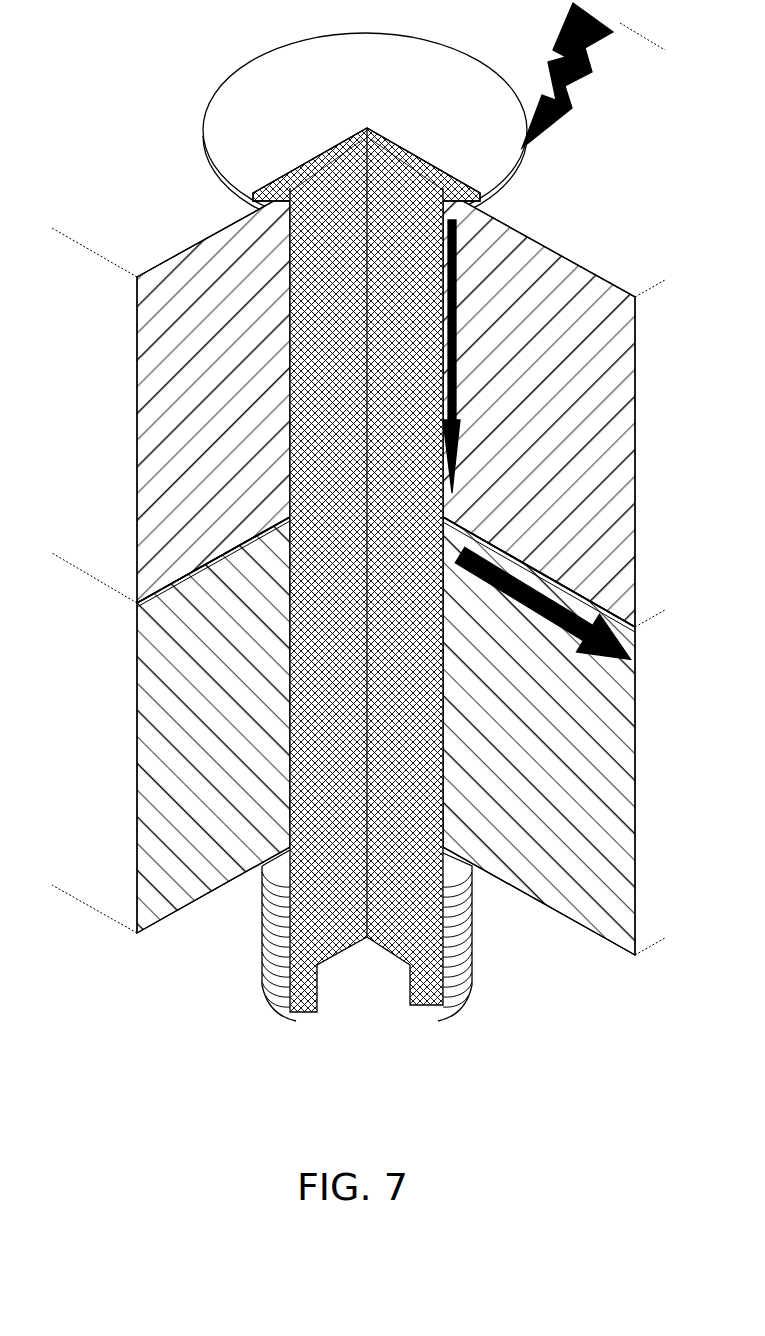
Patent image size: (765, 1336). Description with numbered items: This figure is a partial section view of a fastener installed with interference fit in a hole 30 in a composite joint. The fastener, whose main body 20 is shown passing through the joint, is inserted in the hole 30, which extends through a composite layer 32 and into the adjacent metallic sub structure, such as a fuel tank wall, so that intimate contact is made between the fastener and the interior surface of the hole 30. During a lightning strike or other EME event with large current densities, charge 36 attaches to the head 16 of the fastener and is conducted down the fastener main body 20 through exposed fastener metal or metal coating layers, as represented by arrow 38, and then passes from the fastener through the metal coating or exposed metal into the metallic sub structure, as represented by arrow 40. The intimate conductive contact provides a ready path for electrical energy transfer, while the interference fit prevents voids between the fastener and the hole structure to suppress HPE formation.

The head 16 is at (247, 100).
The bolt shaft 20 is at (357, 378).
The hole 30 is at (297, 426).
The composite layer 32 is at (612, 412).
The charge 36 is at (570, 95).
The arrow 38 is at (458, 390).
The arrow 40 is at (525, 573).